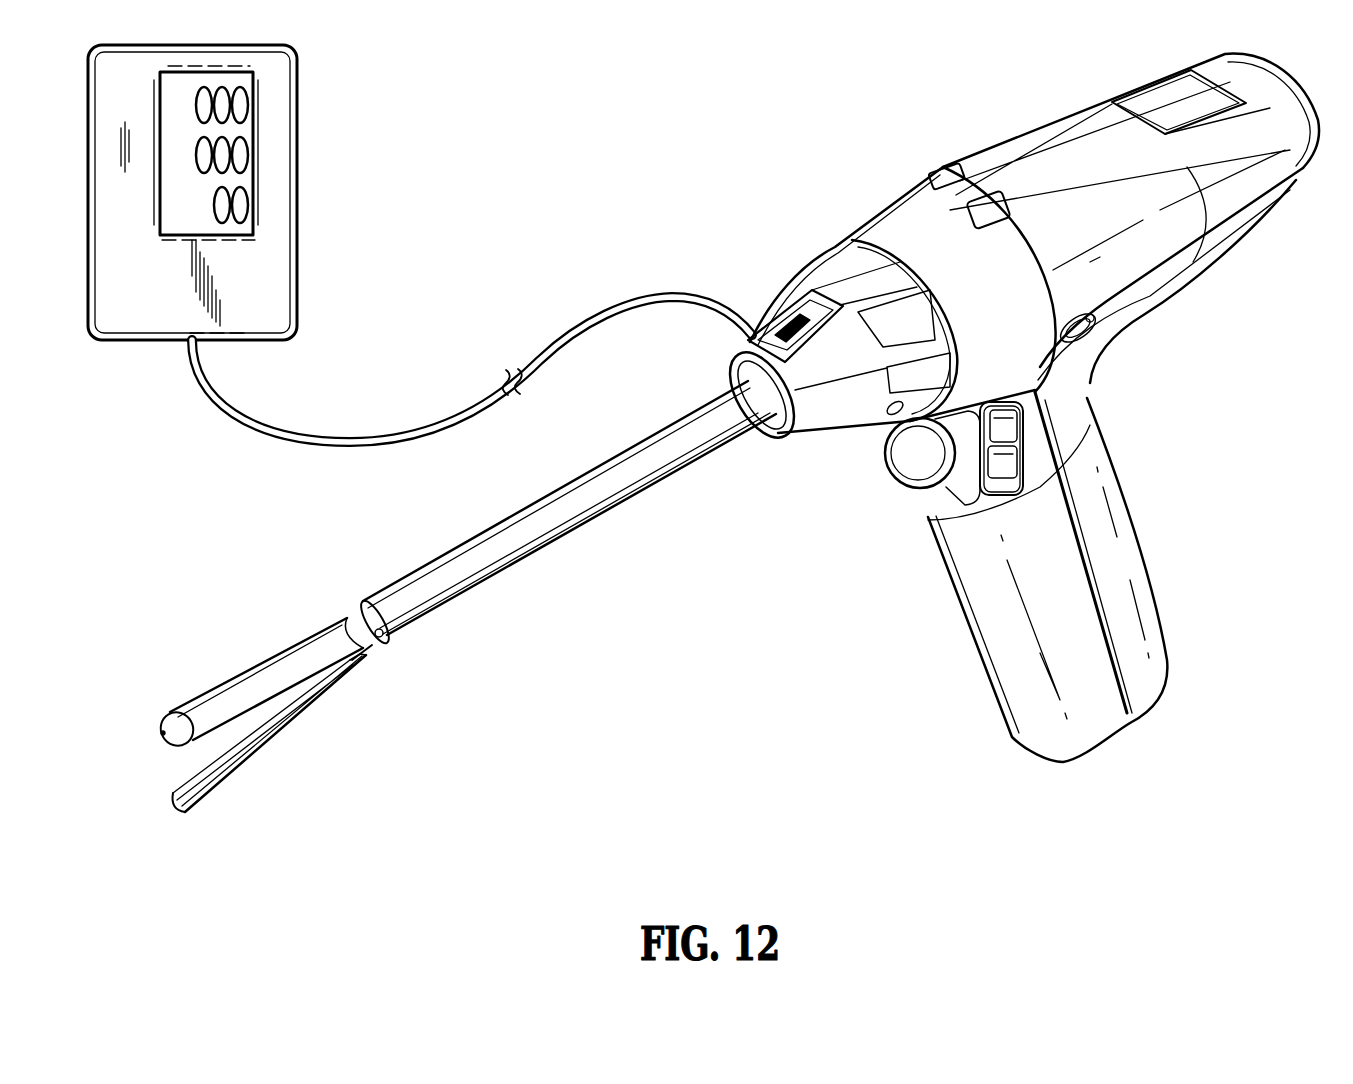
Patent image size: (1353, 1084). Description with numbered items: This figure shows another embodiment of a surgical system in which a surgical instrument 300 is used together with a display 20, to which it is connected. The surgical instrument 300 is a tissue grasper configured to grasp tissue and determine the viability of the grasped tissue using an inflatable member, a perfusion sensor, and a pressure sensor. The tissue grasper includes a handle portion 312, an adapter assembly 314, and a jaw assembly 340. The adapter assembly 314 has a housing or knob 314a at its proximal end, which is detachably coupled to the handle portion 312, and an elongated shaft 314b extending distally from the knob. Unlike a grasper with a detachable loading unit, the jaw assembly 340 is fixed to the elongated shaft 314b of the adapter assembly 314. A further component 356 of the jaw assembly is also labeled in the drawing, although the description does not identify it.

The display 20 is at (297, 193).
The surgical instrument 300 is at (718, 426).
The handle portion 312 is at (1084, 130).
The adapter assembly 314 is at (656, 407).
The housing or knob 314a is at (820, 280).
The elongated shaft 314b is at (587, 480).
The jaw assembly 340 is at (250, 696).
The cartridge assembly of end effector 356 is at (215, 737).